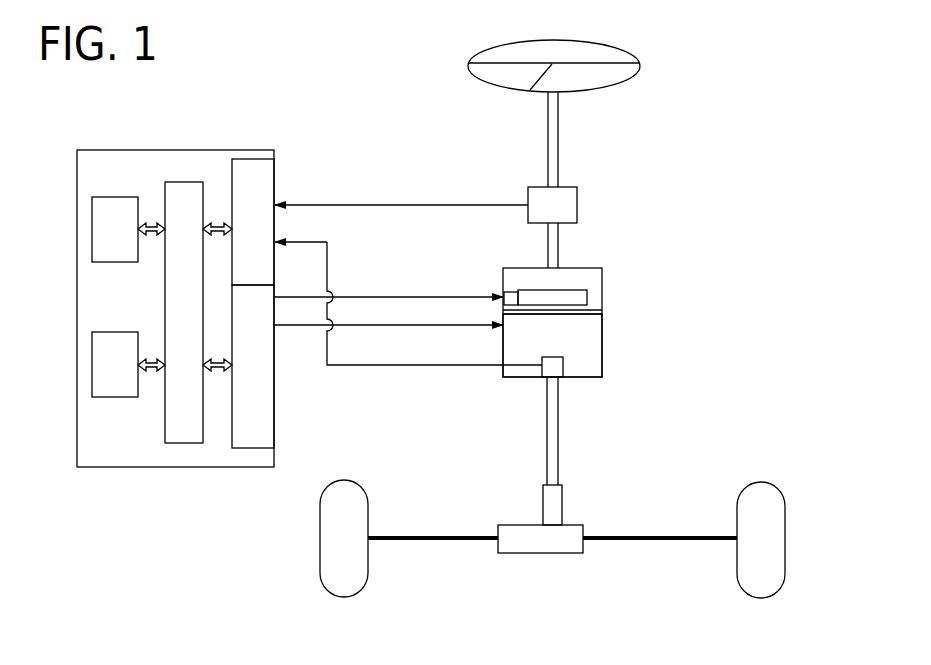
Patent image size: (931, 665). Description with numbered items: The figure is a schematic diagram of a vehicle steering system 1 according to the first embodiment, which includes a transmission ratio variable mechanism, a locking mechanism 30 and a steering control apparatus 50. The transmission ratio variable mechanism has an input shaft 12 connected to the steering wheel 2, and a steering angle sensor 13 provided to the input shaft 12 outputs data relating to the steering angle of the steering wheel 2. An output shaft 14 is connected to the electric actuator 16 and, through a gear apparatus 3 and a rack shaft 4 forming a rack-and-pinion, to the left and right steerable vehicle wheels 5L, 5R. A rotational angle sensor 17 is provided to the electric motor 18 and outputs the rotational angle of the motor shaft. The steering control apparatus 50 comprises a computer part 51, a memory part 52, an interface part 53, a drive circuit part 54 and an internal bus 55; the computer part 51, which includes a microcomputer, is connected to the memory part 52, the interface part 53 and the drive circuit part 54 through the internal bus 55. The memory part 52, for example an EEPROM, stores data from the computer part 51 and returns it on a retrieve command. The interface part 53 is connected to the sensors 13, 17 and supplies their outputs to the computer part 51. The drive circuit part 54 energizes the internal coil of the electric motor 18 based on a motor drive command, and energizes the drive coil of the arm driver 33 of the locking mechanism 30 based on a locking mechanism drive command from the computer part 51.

The vehicle steering system 1 is at (221, 149).
The steering wheel 2 is at (593, 42).
The gear apparatus 3 is at (563, 554).
The rack shaft 4 is at (635, 542).
The left steerable vehicle wheel 5L is at (345, 596).
The right steerable vehicle wheel 5R is at (760, 597).
The input shaft 12 is at (558, 143).
The steering angle sensor 13 is at (577, 200).
The output shaft 14 is at (558, 430).
The electric actuator 16 is at (603, 327).
The rotational angle sensor 17 is at (563, 372).
The electric motor 18 is at (510, 345).
The locking mechanism 30 is at (589, 297).
The arm driver 33 is at (510, 291).
The steering control apparatus 50 is at (108, 467).
The computer part 51 is at (115, 197).
The memory part 52 is at (127, 398).
The interface part 53 is at (255, 159).
The drive circuit part 54 is at (255, 448).
The internal bus 55 is at (188, 444).